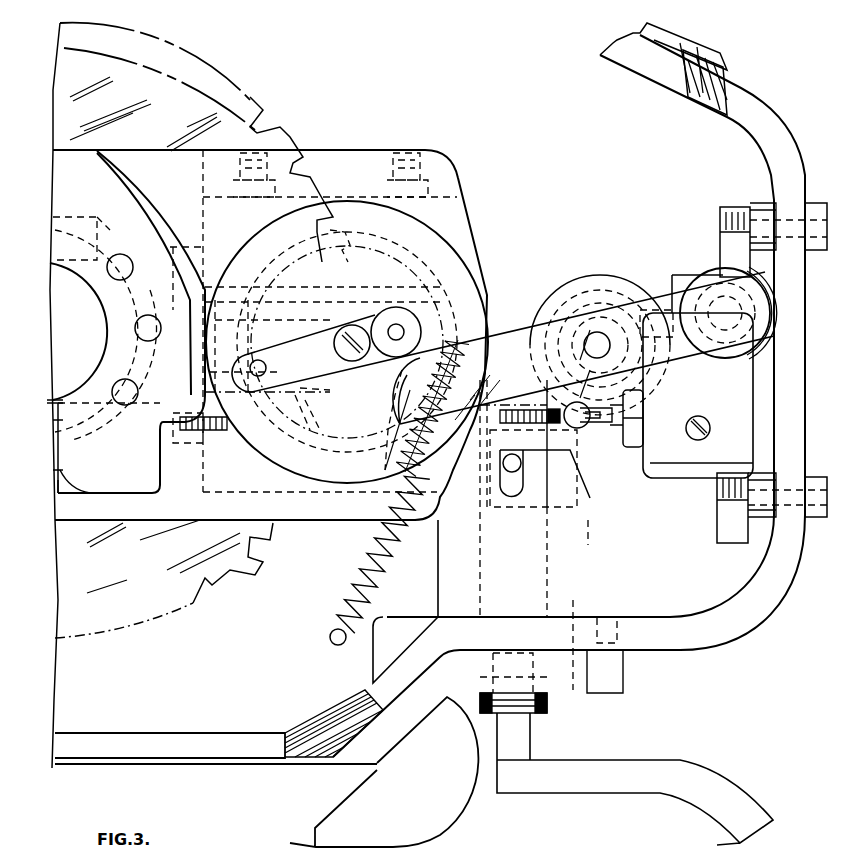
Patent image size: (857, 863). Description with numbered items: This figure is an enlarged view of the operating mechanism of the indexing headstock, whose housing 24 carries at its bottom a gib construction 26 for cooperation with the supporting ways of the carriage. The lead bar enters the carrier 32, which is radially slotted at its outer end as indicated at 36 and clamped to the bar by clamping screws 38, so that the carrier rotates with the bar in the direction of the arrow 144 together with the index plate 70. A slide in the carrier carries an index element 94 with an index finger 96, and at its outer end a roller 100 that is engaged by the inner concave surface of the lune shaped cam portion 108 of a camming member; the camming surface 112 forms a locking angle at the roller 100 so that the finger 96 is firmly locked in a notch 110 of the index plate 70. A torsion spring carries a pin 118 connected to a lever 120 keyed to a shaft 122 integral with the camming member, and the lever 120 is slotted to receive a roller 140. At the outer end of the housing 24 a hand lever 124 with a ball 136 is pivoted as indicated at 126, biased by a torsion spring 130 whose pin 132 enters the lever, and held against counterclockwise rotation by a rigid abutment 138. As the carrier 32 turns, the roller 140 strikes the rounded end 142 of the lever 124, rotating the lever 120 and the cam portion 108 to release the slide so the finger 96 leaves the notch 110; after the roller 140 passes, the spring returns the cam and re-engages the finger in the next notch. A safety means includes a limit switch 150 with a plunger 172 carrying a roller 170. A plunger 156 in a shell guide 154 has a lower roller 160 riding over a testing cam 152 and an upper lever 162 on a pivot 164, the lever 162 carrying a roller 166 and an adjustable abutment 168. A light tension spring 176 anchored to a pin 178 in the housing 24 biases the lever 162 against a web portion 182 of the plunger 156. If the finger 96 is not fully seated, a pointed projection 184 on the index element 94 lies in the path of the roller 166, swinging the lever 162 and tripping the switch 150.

The housing 24 is at (805, 410).
The gib construction 26 is at (445, 795).
The carrier 32 is at (347, 140).
The radial slot 36 is at (90, 493).
The clamping screws 38 is at (57, 403).
The index plate 70 is at (258, 100).
The index element 94 is at (392, 418).
The index finger 96 is at (300, 395).
The roller 100 is at (360, 360).
The lune shaped cam portion 108 is at (478, 240).
The notch 110 is at (280, 552).
The camming surface 112 is at (348, 262).
The pin 118 is at (255, 380).
The lever 120 is at (295, 340).
The shaft 122 is at (322, 405).
The lever 124 is at (667, 355).
The pivot 126 is at (625, 292).
The torsion spring 130 is at (600, 280).
The pin 132 is at (558, 285).
The ball 136 is at (724, 358).
The rigid abutment 138 is at (727, 205).
The roller 140 is at (380, 300).
The rounded end 142 is at (385, 470).
The arrow 144 is at (225, 32).
The limit switch 150 is at (685, 450).
The testing cam 152 is at (525, 737).
The shell guide 154 is at (588, 535).
The plunger 156 is at (590, 572).
The roller 160 is at (535, 700).
The lever 162 is at (560, 428).
The pivot 164 is at (517, 470).
The roller 166 is at (490, 303).
The adjustable abutment 168 is at (565, 423).
The roller 170 is at (586, 364).
The plunger 172 is at (645, 407).
The tension spring 176 is at (335, 585).
The pin 178 is at (338, 645).
The web portion 182 is at (478, 500).
The pointed projection 184 is at (587, 338).